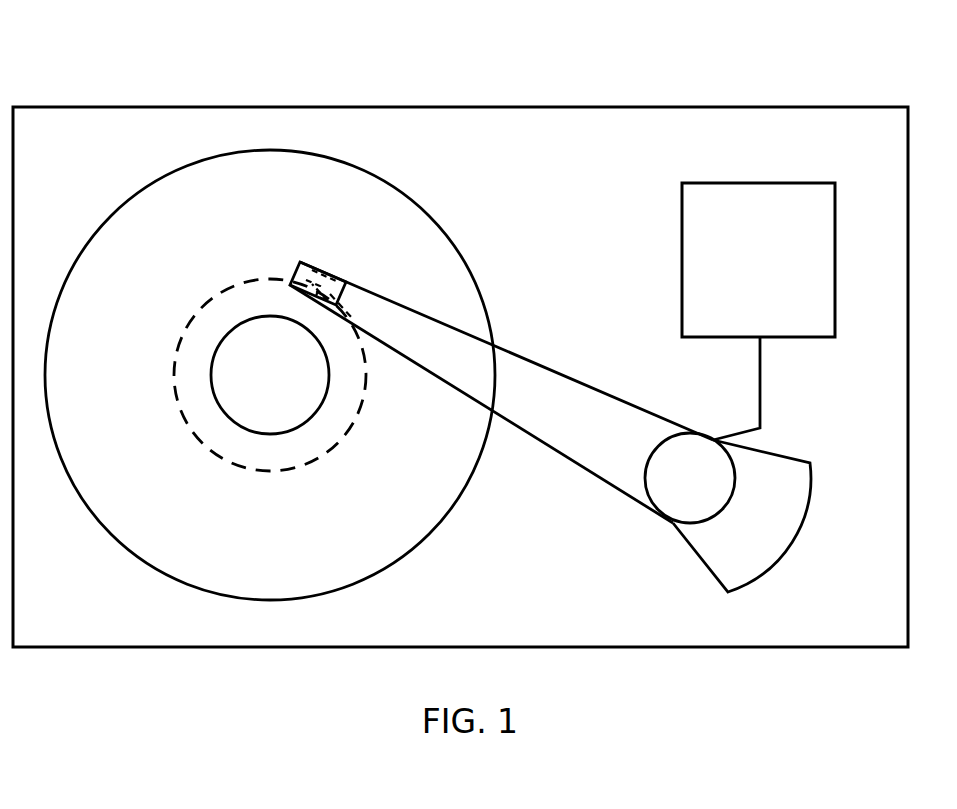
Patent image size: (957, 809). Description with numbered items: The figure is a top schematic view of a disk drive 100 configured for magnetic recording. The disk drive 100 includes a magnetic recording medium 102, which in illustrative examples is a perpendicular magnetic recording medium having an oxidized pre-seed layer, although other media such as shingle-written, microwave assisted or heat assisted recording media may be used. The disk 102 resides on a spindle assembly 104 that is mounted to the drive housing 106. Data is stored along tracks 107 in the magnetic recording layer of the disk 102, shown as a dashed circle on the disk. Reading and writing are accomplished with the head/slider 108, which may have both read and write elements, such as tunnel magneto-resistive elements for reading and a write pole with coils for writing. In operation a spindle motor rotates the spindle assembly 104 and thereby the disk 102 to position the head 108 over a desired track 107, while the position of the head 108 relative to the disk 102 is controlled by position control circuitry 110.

The disk drive 100 is at (224, 82).
The magnetic recording medium 102 is at (405, 192).
The spindle assembly 104 is at (252, 381).
The drive housing 106 is at (611, 107).
The tracks 107 is at (243, 278).
The head/slider 108 is at (328, 283).
The position control circuitry 110 is at (738, 276).